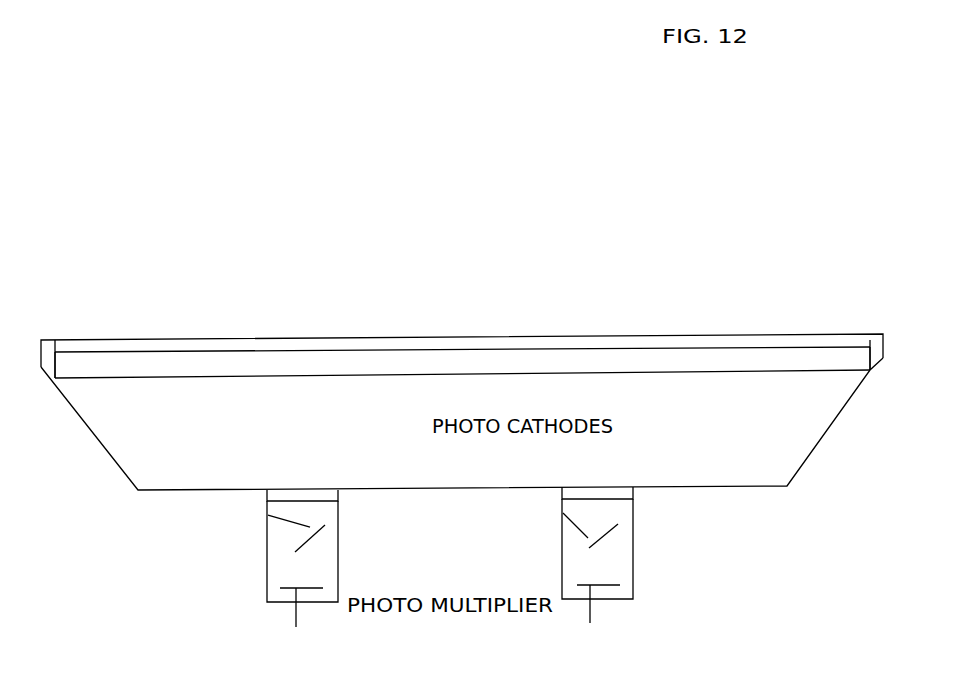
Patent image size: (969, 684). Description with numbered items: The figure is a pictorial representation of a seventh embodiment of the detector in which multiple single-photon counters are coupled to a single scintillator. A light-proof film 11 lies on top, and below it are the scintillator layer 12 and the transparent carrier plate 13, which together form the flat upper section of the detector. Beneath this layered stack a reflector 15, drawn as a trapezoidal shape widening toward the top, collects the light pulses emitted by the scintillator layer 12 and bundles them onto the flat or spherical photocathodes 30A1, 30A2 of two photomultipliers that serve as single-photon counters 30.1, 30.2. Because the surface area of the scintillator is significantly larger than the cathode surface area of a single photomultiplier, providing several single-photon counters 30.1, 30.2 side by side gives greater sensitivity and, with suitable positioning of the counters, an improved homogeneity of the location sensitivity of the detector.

The light-proof film 11 is at (120, 332).
The scintillator layer 12 is at (392, 315).
The transparent carrier plate 13 is at (571, 351).
The reflector 15 is at (124, 450).
The photocathode 30A1 is at (380, 450).
The photocathode 30A2 is at (527, 452).
The single-photon counter 30.1 is at (378, 575).
The single-photon counter 30.2 is at (522, 583).